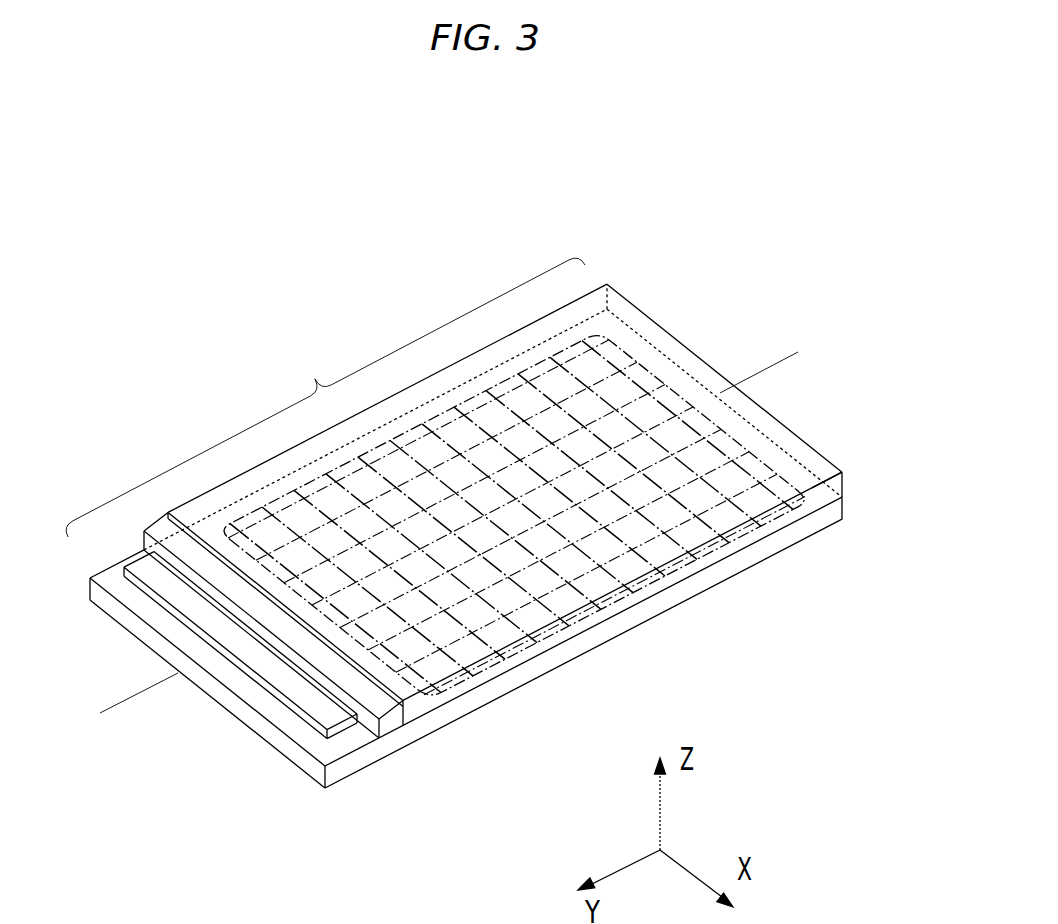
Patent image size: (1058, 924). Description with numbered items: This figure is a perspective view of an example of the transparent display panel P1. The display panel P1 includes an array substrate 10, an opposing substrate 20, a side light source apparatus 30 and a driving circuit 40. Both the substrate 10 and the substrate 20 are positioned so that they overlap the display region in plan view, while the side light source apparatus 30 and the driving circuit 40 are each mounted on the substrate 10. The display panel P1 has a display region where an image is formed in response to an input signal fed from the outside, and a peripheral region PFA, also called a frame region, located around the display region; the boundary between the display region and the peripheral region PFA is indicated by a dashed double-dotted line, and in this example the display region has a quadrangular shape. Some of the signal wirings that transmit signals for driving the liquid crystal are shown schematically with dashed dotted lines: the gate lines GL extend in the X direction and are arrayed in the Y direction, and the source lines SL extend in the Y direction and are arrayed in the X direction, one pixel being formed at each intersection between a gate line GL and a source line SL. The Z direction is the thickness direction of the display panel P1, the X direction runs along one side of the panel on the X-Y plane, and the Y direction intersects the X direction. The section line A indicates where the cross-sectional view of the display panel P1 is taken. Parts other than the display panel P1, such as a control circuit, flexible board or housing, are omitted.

The substrate (array substrate) 10 is at (811, 538).
The substrate (opposing substrate) 20 is at (609, 285).
The side light source apparatus 30 is at (385, 723).
The driving circuit 40 is at (335, 733).
The display panel P1 is at (366, 238).
The gate line GL is at (675, 490).
The source line SL is at (571, 501).
The peripheral region (frame region) PFA is at (827, 479).
The line A- A is at (826, 373).